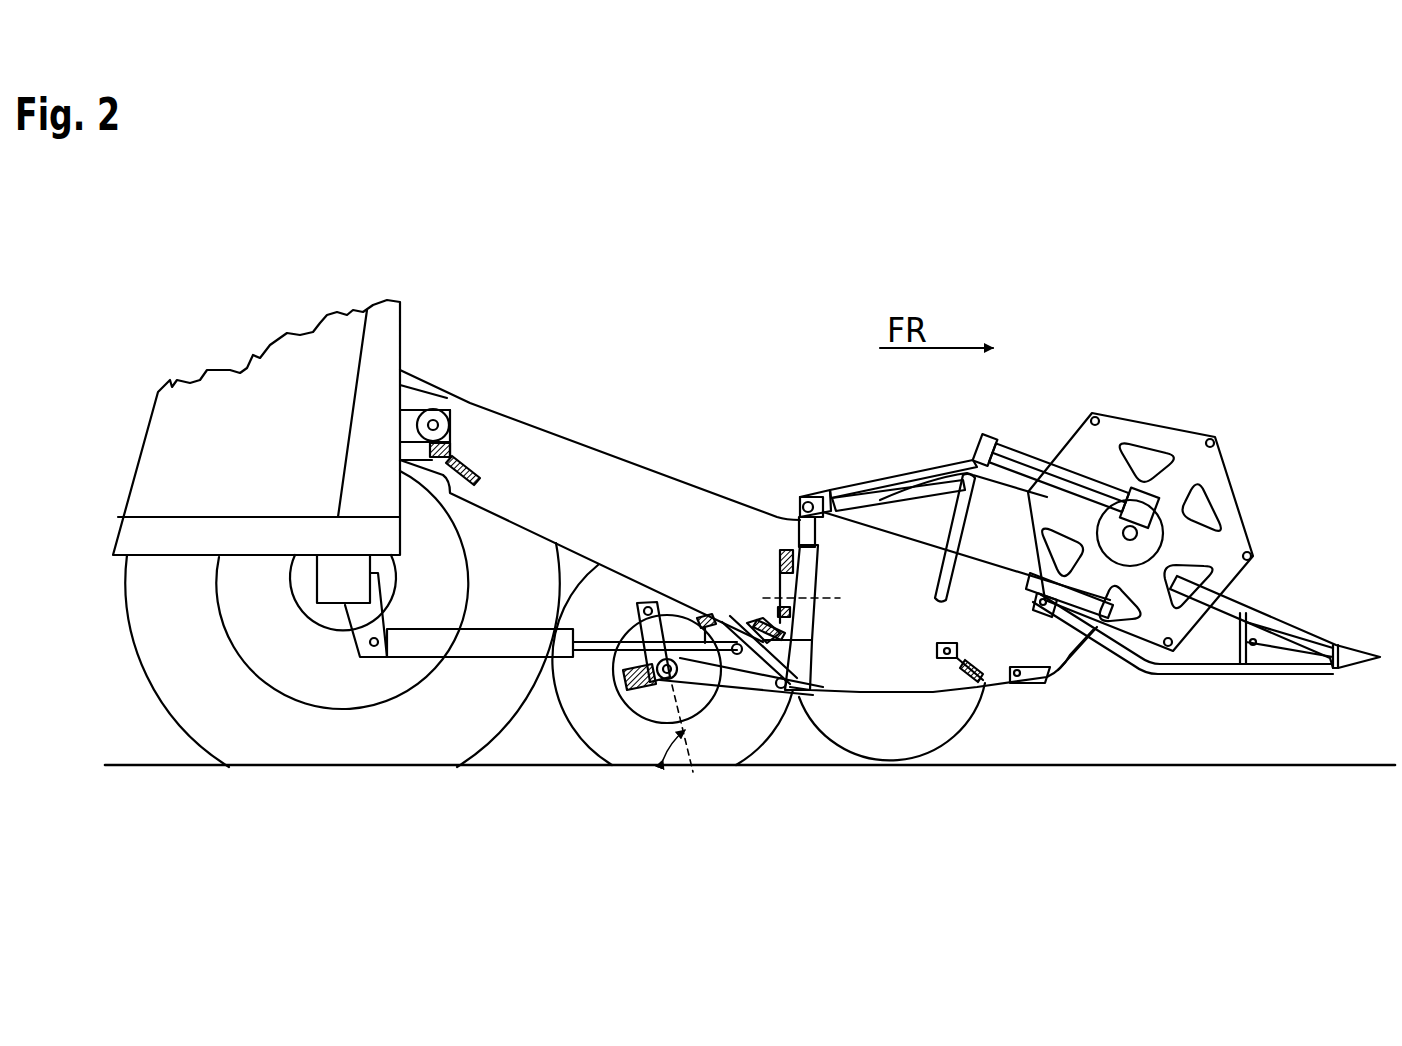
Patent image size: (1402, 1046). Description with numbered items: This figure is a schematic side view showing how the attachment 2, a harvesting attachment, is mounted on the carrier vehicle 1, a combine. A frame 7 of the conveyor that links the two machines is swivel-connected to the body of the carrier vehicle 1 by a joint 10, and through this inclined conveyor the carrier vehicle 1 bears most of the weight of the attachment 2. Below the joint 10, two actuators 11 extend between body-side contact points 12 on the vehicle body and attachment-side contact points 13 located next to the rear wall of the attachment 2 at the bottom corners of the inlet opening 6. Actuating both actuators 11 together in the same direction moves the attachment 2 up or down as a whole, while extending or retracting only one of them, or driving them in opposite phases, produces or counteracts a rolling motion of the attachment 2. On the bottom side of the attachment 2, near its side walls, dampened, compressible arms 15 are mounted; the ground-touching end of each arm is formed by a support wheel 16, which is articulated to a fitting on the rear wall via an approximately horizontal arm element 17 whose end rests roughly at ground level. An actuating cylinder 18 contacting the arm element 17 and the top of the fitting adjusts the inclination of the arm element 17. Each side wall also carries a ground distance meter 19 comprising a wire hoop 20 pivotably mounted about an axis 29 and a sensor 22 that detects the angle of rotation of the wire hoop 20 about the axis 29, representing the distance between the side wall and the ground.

The carrier vehicle 1 is at (692, 332).
The attachment 2 is at (746, 573).
The inlet opening 6 is at (567, 467).
The frame 7 is at (810, 584).
The joint 10 is at (433, 420).
The actuators 11 is at (493, 647).
The body-side contact points 12 is at (330, 603).
The attachment-side contact points 13 is at (784, 688).
The dampened, compressible arms 15 is at (620, 666).
The support wheel 16 is at (643, 738).
The arm element 17 is at (750, 641).
The actuating cylinder 18 is at (722, 624).
The ground distance meter 19 is at (977, 736).
The wire hoop 20 is at (953, 737).
The sensor 22 is at (950, 645).
The axis 29 is at (1000, 687).